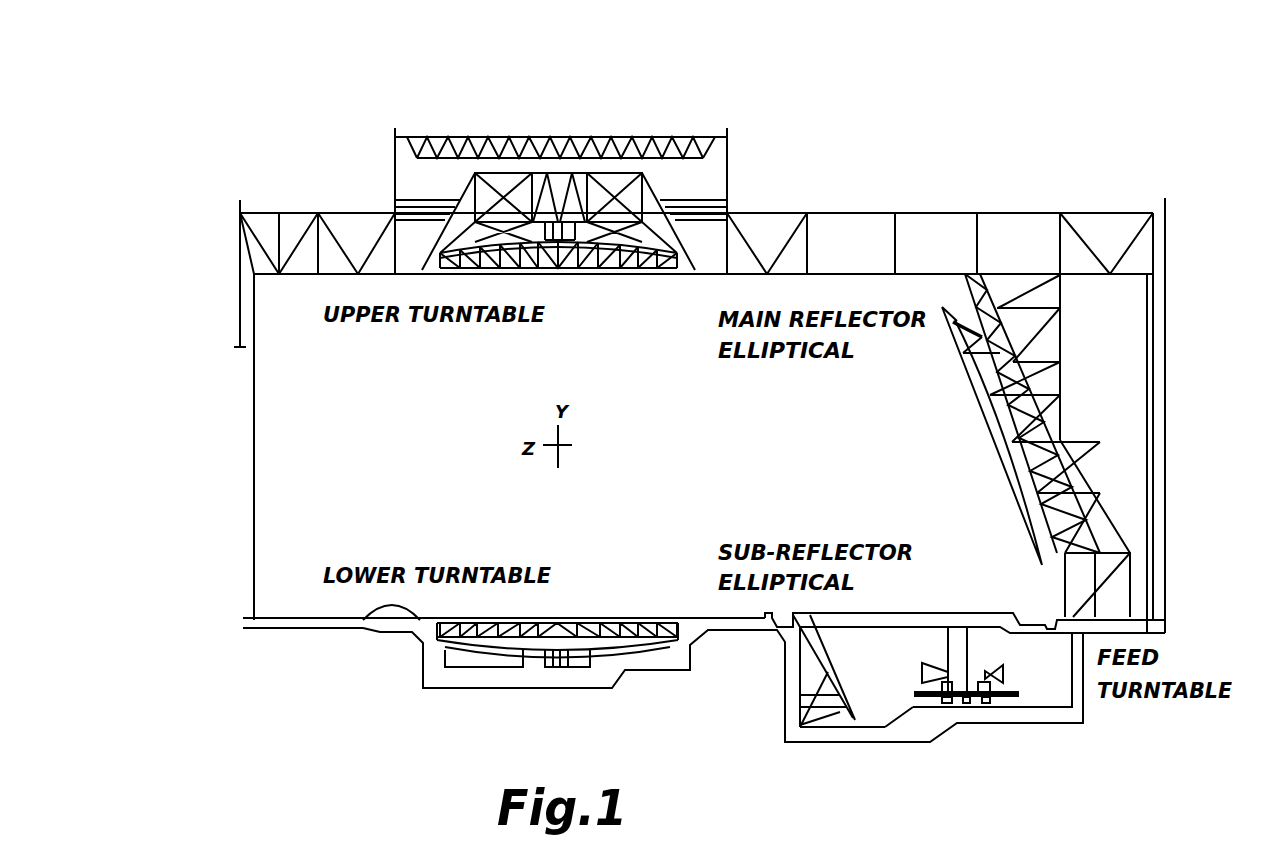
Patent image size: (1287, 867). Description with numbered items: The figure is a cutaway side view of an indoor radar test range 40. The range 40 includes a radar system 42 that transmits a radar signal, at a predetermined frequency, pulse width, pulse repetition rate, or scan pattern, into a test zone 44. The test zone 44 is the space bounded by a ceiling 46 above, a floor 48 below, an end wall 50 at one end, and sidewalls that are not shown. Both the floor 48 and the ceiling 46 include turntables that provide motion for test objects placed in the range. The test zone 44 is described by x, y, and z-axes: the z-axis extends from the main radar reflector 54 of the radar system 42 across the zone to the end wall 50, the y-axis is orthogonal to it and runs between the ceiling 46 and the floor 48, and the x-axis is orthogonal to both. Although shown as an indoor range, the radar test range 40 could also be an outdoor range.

The radar test range 40 is at (1037, 100).
The radar system 42 is at (1003, 702).
The test zone 44 is at (450, 437).
The ceiling 46 is at (352, 275).
The floor 48 is at (368, 620).
The end wall 50 is at (254, 513).
The main radar reflector 54 is at (990, 415).